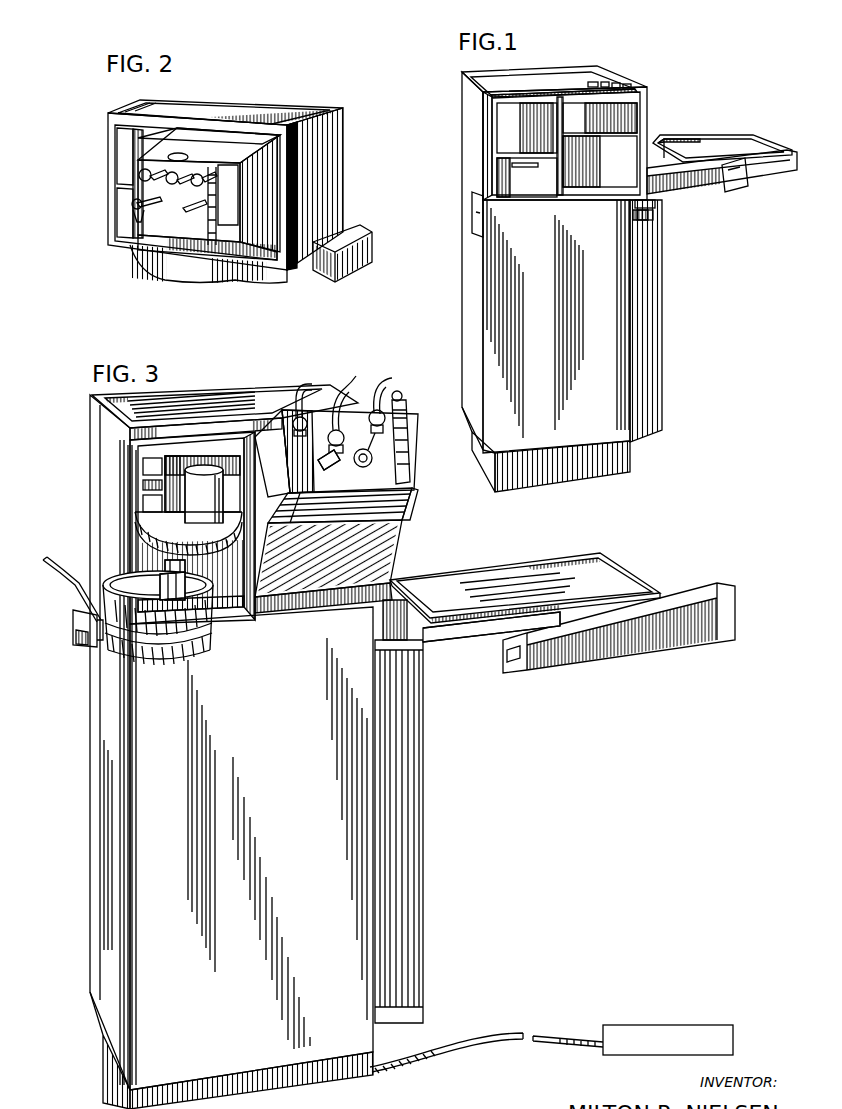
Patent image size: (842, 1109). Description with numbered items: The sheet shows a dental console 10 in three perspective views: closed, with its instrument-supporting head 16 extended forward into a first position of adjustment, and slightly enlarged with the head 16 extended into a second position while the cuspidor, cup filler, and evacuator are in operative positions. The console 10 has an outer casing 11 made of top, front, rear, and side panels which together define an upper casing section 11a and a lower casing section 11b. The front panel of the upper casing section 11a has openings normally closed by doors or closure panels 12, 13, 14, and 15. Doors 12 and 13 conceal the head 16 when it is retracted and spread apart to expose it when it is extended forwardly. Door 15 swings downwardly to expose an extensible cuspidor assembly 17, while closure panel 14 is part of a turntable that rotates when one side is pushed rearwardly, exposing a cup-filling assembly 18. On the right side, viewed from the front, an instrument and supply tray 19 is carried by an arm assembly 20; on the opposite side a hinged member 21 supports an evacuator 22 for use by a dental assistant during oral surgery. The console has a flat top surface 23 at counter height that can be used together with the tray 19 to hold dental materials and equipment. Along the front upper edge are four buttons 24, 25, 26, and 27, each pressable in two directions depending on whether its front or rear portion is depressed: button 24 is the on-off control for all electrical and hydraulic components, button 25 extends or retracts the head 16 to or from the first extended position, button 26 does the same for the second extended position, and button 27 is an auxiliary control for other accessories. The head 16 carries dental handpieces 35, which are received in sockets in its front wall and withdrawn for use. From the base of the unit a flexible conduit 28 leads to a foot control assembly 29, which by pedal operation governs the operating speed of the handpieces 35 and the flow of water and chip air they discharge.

In FIG. 1, the console 10 is at (452, 322).
In FIG. 2, the console 10 is at (97, 177).
In FIG. 3, the console 10 is at (78, 774).
In FIG. 1, the outer casing 11 is at (470, 255).
In FIG. 3, the outer casing 11 is at (90, 710).
In FIG. 1, the upper casing section 11a is at (472, 136).
In FIG. 2, the upper casing section 11a is at (340, 180).
In FIG. 3, the upper casing section 11a is at (100, 500).
In FIG. 1, the lower casing section 11b is at (470, 366).
In FIG. 3, the lower casing section 11b is at (357, 940).
In FIG. 1, the door 12 is at (634, 112).
In FIG. 2, the door 12 is at (262, 146).
In FIG. 1, the door 13 is at (634, 140).
In FIG. 2, the door 13 is at (262, 222).
In FIG. 3, the door 13 is at (313, 580).
In FIG. 1, the closure panel 14 is at (500, 113).
In FIG. 1, the door 15 is at (500, 175).
In FIG. 2, the instrument-supporting head 16 is at (212, 155).
In FIG. 3, the instrument-supporting head 16 is at (280, 435).
In FIG. 3, the extensible cuspidor assembly 17 is at (113, 583).
In FIG. 3, the cup-filling assembly 18 is at (140, 470).
In FIG. 1, the instrument and supply tray 19 is at (731, 145).
In FIG. 3, the instrument and supply tray 19 is at (612, 578).
In FIG. 1, the arm assembly 20 is at (702, 188).
In FIG. 2, the arm assembly 20 is at (356, 253).
In FIG. 3, the arm assembly 20 is at (586, 640).
In FIG. 3, the hinged member 21 is at (78, 648).
In FIG. 1, the evacuator 22 is at (474, 222).
In FIG. 3, the evacuator 22 is at (70, 577).
In FIG. 1, the flat top surface 23 is at (560, 68).
In FIG. 2, the flat top surface 23 is at (259, 105).
In FIG. 3, the flat top surface 23 is at (200, 400).
In FIG. 1, the on-off button 24 is at (592, 72).
In FIG. 1, the button 25 is at (602, 78).
In FIG. 1, the button 26 is at (613, 83).
In FIG. 1, the auxiliary button 27 is at (626, 86).
In FIG. 3, the flexible conduit 28 is at (505, 1032).
In FIG. 3, the foot control assembly 29 is at (650, 1025).
In FIG. 3, the dental handpieces 35 is at (366, 420).